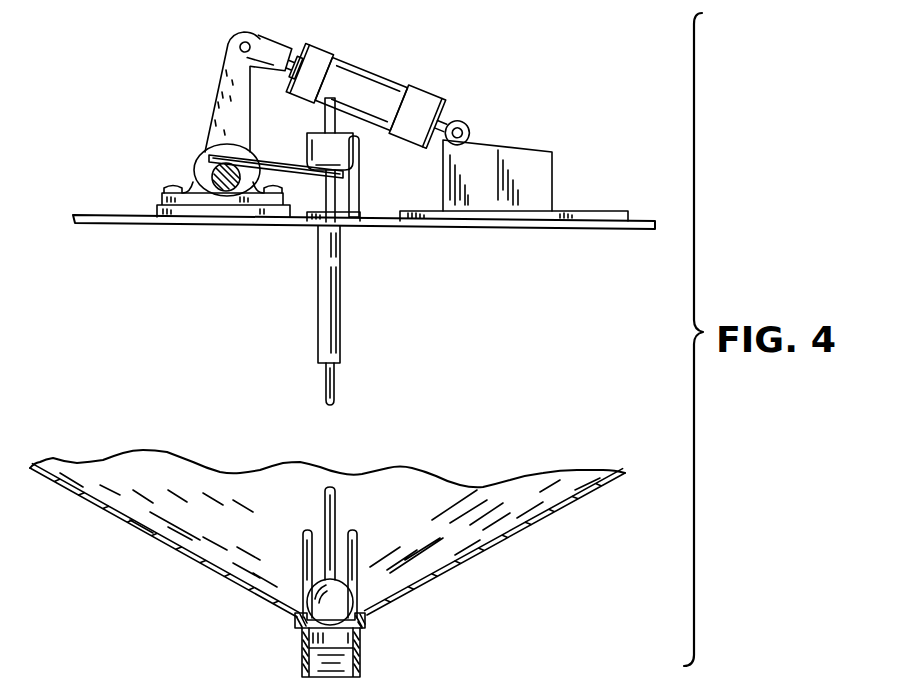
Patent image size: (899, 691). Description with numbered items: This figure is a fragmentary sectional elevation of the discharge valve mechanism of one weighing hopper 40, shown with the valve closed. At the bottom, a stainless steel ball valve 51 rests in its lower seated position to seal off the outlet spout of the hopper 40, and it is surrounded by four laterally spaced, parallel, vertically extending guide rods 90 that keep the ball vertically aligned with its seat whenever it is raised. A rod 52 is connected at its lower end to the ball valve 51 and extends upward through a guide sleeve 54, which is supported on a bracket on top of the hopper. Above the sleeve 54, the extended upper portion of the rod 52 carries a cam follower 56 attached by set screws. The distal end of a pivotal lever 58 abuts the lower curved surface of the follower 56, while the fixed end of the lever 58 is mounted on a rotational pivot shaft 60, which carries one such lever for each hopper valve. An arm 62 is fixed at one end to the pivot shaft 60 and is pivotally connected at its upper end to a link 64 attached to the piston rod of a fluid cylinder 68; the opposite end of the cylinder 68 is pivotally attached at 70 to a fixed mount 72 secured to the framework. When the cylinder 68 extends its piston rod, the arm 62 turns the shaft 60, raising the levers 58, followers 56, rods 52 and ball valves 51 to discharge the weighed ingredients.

The hopper 40 is at (503, 542).
The ball valve 51 is at (349, 594).
The rod 52 is at (332, 202).
The guide sleeve 54 is at (340, 318).
The cam follower 56 is at (317, 140).
The pivotal lever 58 is at (283, 167).
The pivot shaft 60 is at (220, 174).
The arm 62 is at (217, 100).
The link 64 is at (270, 49).
The fluid cylinder 68 is at (385, 80).
The pivotal attachment 70 is at (462, 124).
The fixed mount 72 is at (518, 152).
The guide rods 90 is at (357, 548).